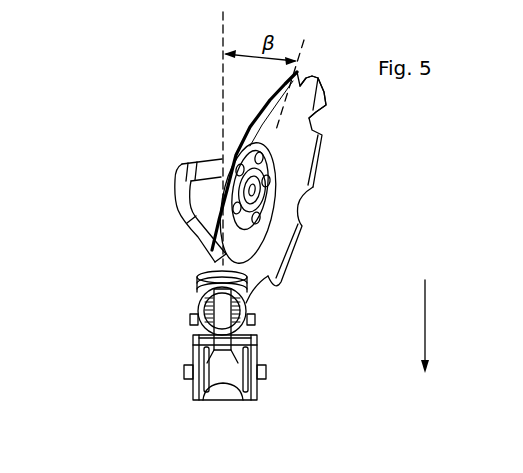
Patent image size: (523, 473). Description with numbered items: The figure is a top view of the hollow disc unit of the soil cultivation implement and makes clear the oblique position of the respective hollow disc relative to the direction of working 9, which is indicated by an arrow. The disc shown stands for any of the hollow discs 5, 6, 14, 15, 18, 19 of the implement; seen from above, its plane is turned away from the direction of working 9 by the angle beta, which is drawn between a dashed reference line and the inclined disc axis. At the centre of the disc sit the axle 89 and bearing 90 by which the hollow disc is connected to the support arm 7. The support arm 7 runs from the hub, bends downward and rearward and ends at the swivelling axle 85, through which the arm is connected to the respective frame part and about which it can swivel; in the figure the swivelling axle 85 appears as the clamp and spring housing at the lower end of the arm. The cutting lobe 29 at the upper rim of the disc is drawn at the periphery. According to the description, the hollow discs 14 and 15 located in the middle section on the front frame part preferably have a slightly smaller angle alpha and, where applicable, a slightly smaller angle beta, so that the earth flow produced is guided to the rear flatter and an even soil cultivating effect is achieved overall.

The hollow disc 5 is at (255, 187).
The hollow disc 6 is at (300, 146).
The hollow disc 14 is at (188, 187).
The hollow disc 15 is at (188, 187).
The hollow disc 18 is at (188, 187).
The hollow disc 19 is at (238, 145).
The notched cutting lobe 29 is at (283, 122).
The axle 89 is at (168, 155).
The bearing 90 is at (200, 155).
The support arm 7 is at (180, 231).
The swivelling axle 85 is at (267, 377).
The direction of working 9 is at (433, 326).